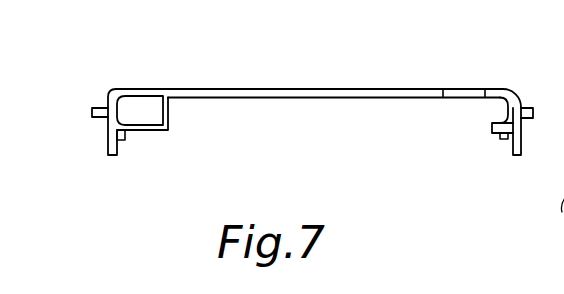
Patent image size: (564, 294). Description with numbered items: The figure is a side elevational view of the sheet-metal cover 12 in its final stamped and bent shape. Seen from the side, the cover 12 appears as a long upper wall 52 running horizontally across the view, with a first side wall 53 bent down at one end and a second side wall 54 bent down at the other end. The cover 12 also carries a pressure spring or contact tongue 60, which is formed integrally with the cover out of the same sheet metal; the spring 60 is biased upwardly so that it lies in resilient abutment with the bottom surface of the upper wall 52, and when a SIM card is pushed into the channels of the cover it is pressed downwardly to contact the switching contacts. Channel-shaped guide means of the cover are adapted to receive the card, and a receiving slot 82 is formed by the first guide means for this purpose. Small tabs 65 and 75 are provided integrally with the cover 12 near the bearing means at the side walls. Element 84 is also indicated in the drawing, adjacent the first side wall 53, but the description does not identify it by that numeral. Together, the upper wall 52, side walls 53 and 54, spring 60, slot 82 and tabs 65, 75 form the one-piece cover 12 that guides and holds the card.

The cover 12 is at (389, 181).
The upper wall 52 is at (343, 96).
The first side wall 53 is at (513, 108).
The second side wall 54 is at (107, 101).
The pressure spring 60 is at (148, 104).
The tab 65 is at (99, 119).
The tab 75 is at (532, 108).
The receiving slot 82 is at (484, 113).
The lip 84 is at (498, 134).